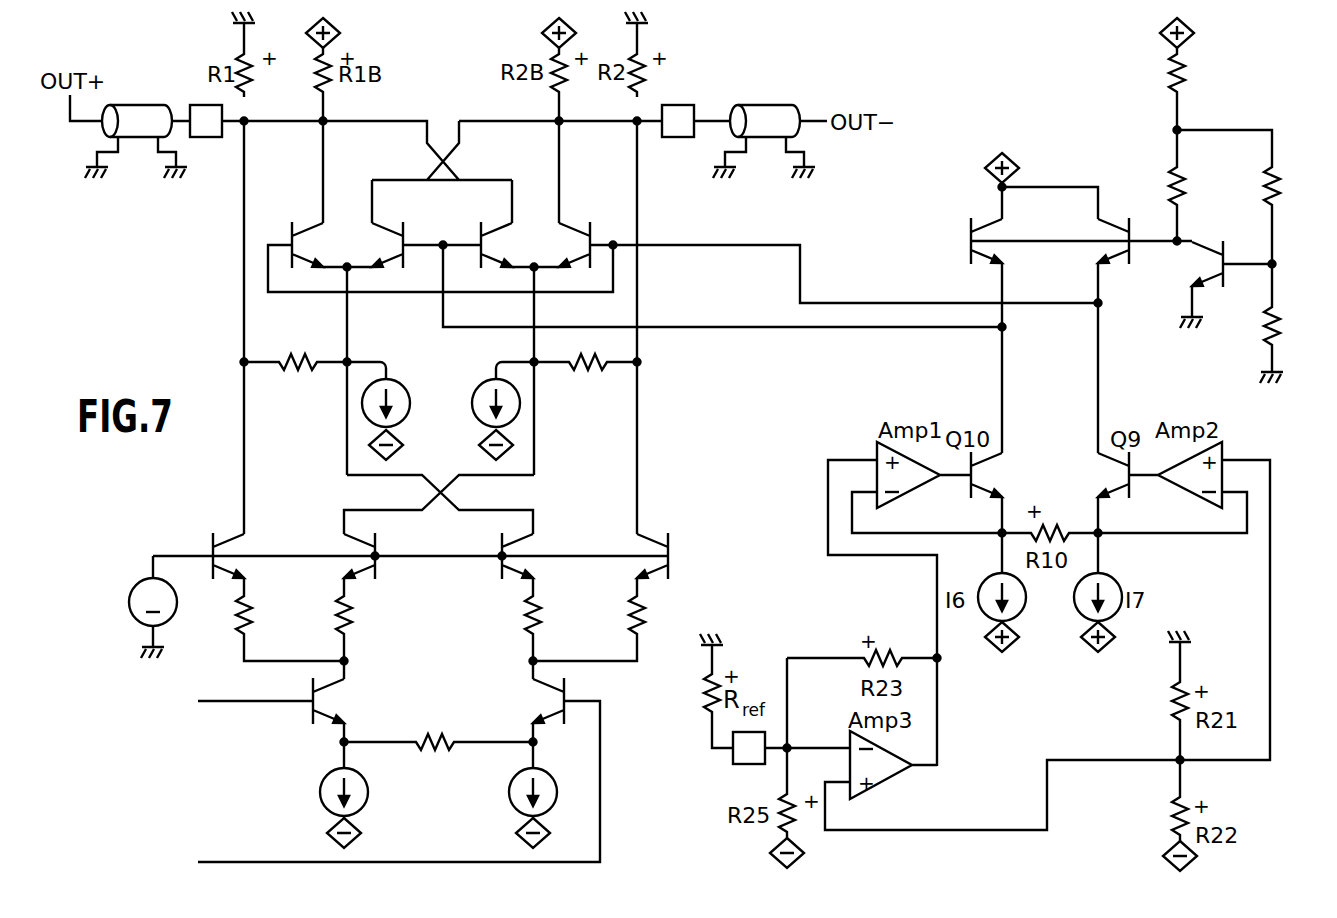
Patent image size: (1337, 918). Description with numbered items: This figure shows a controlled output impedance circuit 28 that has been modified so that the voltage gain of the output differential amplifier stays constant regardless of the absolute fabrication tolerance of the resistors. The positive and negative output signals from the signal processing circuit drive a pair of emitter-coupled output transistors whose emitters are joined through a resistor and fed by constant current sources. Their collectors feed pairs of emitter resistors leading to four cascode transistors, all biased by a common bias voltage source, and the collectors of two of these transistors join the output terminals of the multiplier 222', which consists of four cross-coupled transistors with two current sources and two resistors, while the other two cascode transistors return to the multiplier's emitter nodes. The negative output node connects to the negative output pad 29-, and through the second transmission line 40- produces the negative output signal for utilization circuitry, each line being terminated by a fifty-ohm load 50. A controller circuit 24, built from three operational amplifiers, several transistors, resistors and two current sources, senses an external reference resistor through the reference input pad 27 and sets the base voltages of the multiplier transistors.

The second transmission line 40- is at (761, 115).
The 50 ohm load 50 is at (451, 121).
The negative output pad 29- is at (673, 137).
The multiplier 222' is at (670, 327).
The controlled output impedance circuit 28 is at (452, 668).
The controller circuit 24 is at (1165, 365).
The reference input pad 27 is at (745, 764).